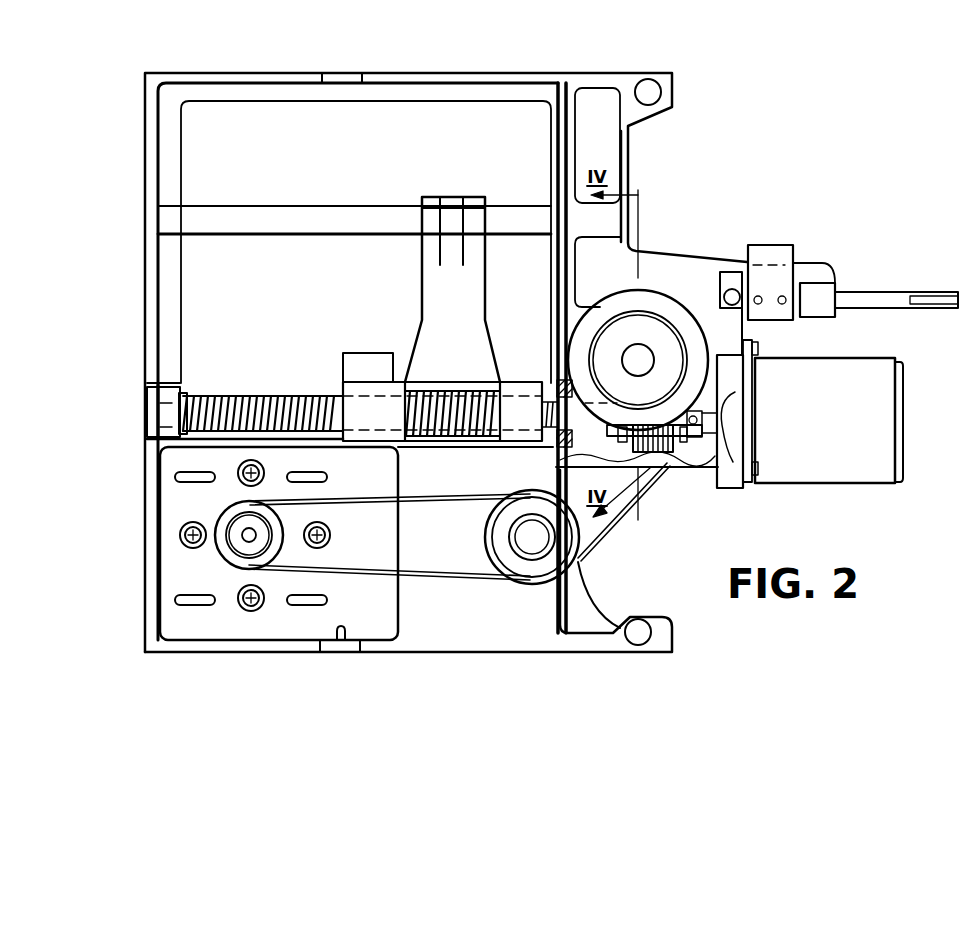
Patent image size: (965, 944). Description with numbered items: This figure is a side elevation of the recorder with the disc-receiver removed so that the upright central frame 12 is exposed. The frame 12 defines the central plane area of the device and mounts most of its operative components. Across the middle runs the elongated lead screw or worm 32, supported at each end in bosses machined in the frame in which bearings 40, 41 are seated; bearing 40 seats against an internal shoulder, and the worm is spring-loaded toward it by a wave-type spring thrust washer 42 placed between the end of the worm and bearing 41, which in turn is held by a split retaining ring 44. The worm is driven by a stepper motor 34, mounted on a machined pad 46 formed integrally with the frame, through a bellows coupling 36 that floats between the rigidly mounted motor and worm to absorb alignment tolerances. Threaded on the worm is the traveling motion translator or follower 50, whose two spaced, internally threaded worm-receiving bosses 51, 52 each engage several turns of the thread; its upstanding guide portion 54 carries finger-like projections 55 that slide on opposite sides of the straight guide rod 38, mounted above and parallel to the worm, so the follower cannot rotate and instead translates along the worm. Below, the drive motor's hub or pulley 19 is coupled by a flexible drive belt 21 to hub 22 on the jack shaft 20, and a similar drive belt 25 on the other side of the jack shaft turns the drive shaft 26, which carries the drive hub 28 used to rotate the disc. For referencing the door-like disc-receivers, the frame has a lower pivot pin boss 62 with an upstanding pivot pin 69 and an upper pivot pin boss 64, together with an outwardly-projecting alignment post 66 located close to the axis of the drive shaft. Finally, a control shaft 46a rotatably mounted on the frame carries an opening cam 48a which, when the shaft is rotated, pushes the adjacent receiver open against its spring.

The central frame 12 is at (415, 79).
The upper pivot pin boss 64 is at (335, 78).
The guide rod 38 is at (275, 218).
The finger-like projections 55 is at (432, 200).
The upstanding guide portion 54 is at (444, 305).
The motion translator or follower 50 is at (373, 355).
The worm-receiving boss 51 is at (372, 441).
The worm-receiving boss 52 is at (520, 441).
The lead screw or worm 32 is at (262, 395).
The split retaining ring 44 is at (156, 408).
The bearing 41 is at (167, 393).
The wave-type spring thrust washer 42 is at (185, 394).
The bearing 40 is at (558, 392).
The flexible drive belt 21 is at (425, 505).
The lower pivot pin boss 62 is at (332, 643).
The pivot pin 69 is at (346, 627).
The drive hub or pulley 19 is at (226, 521).
The hub or pulley 22 is at (528, 562).
The jack shaft 20 is at (523, 546).
The drive belt 25 is at (595, 548).
The drive hub 28 is at (664, 306).
The drive shaft 26 is at (629, 369).
The bellows coupling 36 is at (668, 452).
The alignment post 66 is at (733, 292).
The machined pad 46 is at (742, 262).
The opening cam 48a is at (790, 250).
The control shaft 46a is at (890, 292).
The stepper motor 34 is at (813, 429).